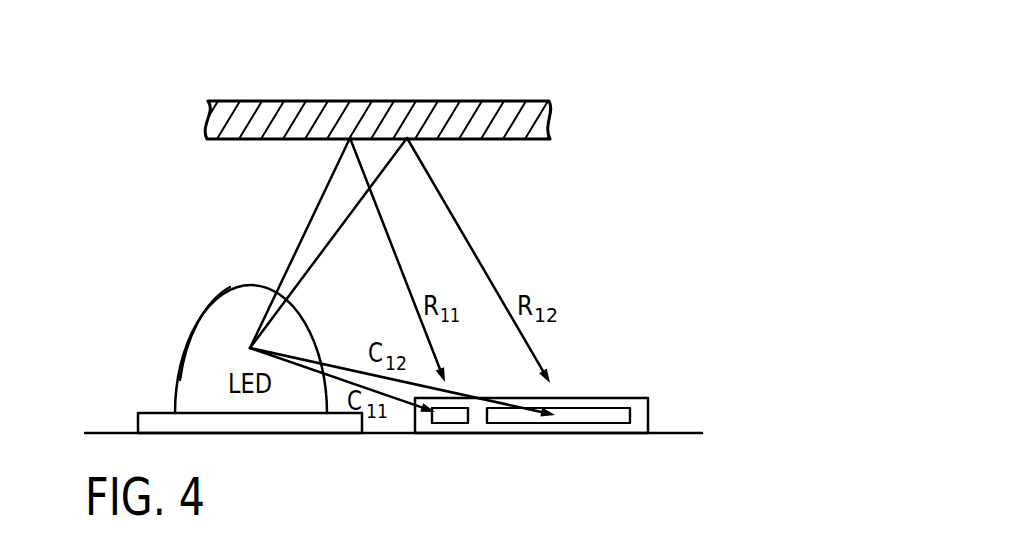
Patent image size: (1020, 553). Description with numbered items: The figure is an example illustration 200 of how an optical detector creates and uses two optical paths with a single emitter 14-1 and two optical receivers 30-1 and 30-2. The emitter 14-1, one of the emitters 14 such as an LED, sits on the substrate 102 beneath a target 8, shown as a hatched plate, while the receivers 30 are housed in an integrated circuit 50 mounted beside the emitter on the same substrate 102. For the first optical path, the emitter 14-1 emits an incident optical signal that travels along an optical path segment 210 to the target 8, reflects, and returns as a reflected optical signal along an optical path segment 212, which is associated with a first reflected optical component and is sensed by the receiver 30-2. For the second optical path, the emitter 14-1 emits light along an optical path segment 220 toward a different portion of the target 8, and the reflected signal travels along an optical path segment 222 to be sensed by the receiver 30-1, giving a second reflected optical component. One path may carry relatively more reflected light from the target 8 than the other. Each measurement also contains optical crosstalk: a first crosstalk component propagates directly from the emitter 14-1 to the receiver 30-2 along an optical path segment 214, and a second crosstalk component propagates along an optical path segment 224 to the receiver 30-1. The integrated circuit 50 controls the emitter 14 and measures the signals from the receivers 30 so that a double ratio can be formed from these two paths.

The target 8 is at (376, 101).
The emitter 14 is at (215, 297).
The emitter 14-1 is at (202, 310).
The optical receiver 30 is at (448, 425).
The optical receiver 30-1 is at (560, 425).
The optical receiver 30-2 is at (450, 425).
The integrated circuit 50 is at (650, 412).
The substrate 102 is at (662, 435).
The example illustration 200 is at (580, 33).
The optical path segment 210 is at (298, 245).
The optical path segment 212 is at (398, 257).
The optical path segment 214 is at (405, 402).
The optical path segment 220 is at (348, 218).
The optical path segment 222 is at (480, 255).
The optical path segment 224 is at (350, 370).